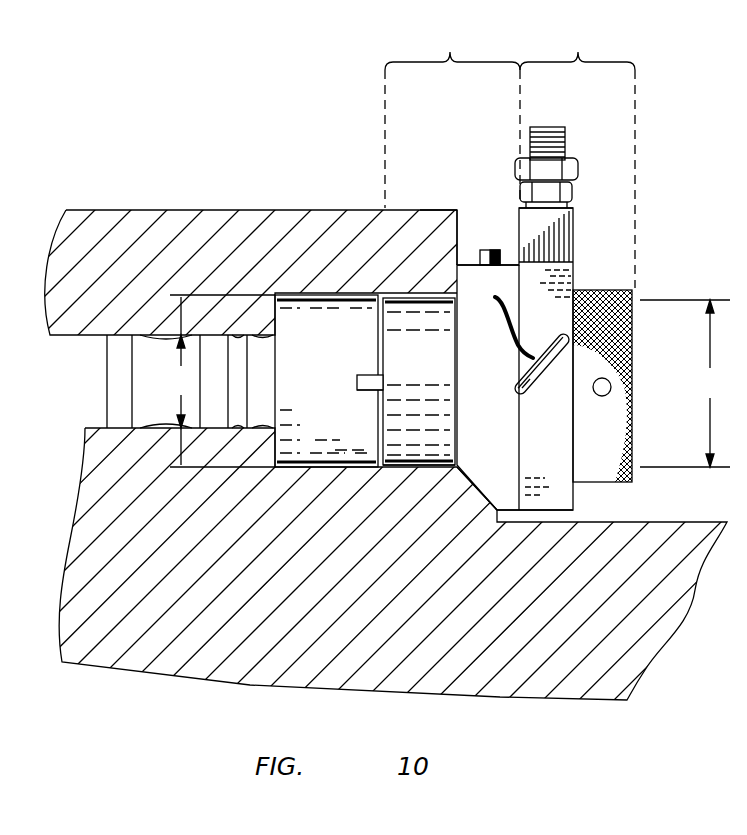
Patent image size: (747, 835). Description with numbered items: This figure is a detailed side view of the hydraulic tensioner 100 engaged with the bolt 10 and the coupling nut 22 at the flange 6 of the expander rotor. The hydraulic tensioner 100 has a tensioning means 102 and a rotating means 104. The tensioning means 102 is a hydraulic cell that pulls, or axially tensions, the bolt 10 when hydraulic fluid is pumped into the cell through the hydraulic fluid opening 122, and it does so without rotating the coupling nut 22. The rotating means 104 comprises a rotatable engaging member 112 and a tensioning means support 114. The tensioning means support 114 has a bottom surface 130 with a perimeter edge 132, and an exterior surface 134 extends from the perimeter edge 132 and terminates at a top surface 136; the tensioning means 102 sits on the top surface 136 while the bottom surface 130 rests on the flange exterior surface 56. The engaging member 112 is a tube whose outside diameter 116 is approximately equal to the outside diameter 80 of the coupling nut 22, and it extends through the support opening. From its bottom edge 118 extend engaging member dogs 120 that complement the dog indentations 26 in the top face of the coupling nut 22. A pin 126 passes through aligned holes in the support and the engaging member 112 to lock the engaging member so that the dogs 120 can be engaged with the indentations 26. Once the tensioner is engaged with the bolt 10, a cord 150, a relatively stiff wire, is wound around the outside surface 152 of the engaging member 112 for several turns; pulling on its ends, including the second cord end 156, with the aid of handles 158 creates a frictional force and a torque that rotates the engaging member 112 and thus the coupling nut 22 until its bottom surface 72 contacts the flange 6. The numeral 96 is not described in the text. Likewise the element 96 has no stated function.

The flange 6 is at (222, 210).
The bolt 10 is at (104, 369).
The coupling nut 22 is at (328, 377).
The dog indentations 26 is at (366, 375).
The flange exterior surface 56 is at (462, 262).
The bottom surface 72 is at (282, 332).
The outside diameter 80 is at (220, 381).
The housing end face 96 is at (457, 212).
The hydraulic tensioner 100 is at (592, 290).
The tensioning means 102 is at (577, 154).
The rotating means 104 is at (452, 114).
The engaging member 112 is at (440, 362).
The tensioning means support 114 is at (512, 427).
The outside diameter 116 is at (688, 383).
The bottom edge 118 is at (372, 447).
The engaging member dogs 120 is at (368, 392).
The hydraulic fluid opening 122 is at (580, 164).
The pin 126 is at (514, 262).
The bottom surface 130 is at (460, 322).
The perimeter edge 132 is at (494, 240).
The exterior surface 134 is at (470, 500).
The top surface 136 is at (512, 480).
The cord 150 is at (504, 346).
The outside surface 152 is at (427, 468).
The second cord end 156 is at (546, 352).
The handles 158 is at (556, 388).